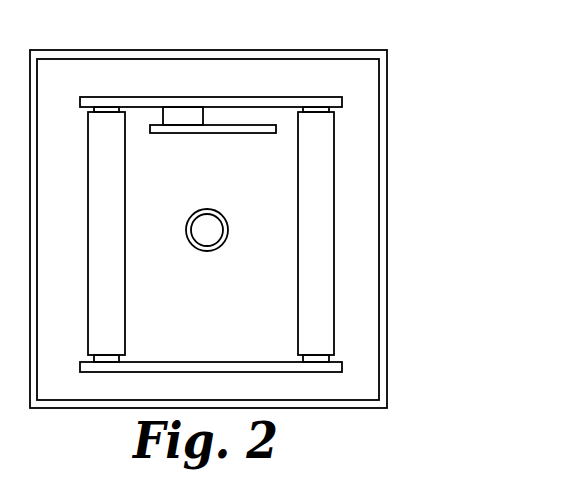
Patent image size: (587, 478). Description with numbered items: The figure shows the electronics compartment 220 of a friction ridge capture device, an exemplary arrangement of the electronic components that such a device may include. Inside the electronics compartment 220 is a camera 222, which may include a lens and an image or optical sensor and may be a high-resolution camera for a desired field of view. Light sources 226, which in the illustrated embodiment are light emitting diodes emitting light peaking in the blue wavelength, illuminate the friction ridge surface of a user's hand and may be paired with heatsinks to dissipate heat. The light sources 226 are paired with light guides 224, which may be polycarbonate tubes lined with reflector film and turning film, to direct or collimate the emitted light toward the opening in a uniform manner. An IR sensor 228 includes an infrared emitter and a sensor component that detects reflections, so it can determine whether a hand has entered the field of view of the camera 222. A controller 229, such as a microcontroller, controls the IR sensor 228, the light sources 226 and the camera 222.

The electronics compartment 220 is at (362, 145).
The camera 222 is at (210, 235).
The light guides 224 is at (308, 172).
The light sources 226 is at (107, 108).
The IR sensor 228 is at (183, 114).
The controller 229 is at (250, 128).